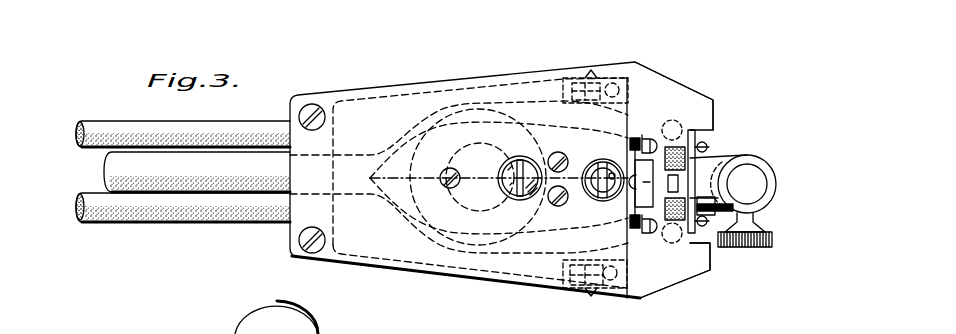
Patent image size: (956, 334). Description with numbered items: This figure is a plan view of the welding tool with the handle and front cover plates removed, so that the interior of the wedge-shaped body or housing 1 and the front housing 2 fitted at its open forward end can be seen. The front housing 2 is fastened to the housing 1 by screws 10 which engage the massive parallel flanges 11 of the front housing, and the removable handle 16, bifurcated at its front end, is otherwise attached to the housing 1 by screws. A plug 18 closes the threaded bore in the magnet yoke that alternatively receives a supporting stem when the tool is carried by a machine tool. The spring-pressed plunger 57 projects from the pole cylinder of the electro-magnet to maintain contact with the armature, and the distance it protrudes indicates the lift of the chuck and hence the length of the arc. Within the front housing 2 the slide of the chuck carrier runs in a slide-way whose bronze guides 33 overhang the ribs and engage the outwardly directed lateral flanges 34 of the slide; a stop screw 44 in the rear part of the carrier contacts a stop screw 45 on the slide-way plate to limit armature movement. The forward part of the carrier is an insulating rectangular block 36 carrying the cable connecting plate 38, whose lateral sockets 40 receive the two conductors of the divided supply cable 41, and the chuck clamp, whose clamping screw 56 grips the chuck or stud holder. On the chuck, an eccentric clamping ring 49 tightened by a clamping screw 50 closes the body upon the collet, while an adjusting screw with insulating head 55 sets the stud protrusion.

The body or housing 1 is at (354, 93).
The front housing 2 is at (648, 83).
The screws 10 is at (587, 76).
The parallel flanges 11 is at (625, 80).
The removable handle 16 is at (252, 317).
The plug 18 is at (512, 172).
The guides 33 is at (645, 130).
The lateral flanges 34 is at (650, 137).
The rectangular block 36 is at (662, 233).
The cable connecting plate 38 is at (691, 132).
The sockets 40 is at (675, 130).
The supply cable 41 is at (178, 165).
The stop screw 44 is at (677, 180).
The stop screw 45 is at (612, 175).
The eccentric clamping ring 49 is at (764, 208).
The clamping screw 50 is at (736, 248).
The insulating head 55 is at (747, 173).
The clamping screw 56 is at (706, 268).
The spring-pressed plunger 57 is at (613, 192).